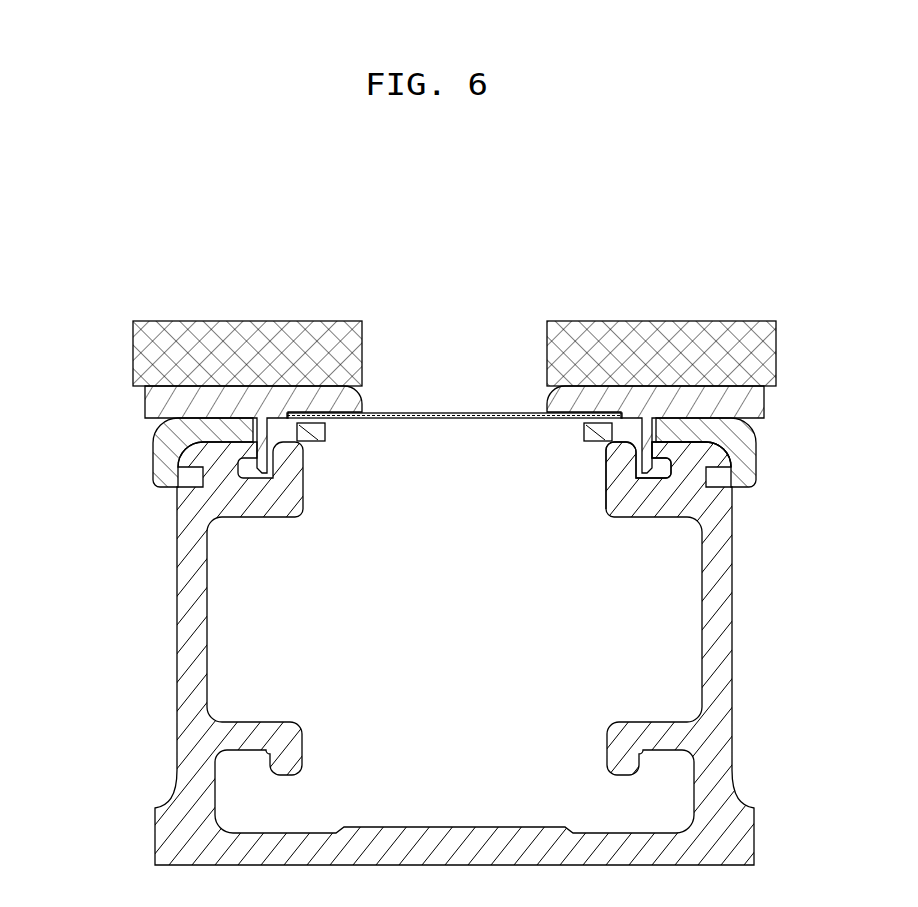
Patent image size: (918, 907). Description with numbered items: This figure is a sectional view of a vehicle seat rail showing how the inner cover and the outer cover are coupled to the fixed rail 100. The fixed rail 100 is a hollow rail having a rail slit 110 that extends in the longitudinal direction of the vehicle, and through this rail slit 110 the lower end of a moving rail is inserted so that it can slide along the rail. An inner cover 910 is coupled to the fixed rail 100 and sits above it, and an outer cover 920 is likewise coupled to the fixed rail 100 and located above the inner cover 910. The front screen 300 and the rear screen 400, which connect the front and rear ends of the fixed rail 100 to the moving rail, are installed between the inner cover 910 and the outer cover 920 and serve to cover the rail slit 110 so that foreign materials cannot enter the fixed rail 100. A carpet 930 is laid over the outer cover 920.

The fixed rail 100 is at (722, 641).
The rail slit 110 is at (610, 477).
The front screen 300 is at (454, 313).
The rear screen 400 is at (437, 413).
The inner cover 910 is at (158, 469).
The outer cover 920 is at (158, 409).
The carpet 930 is at (662, 321).